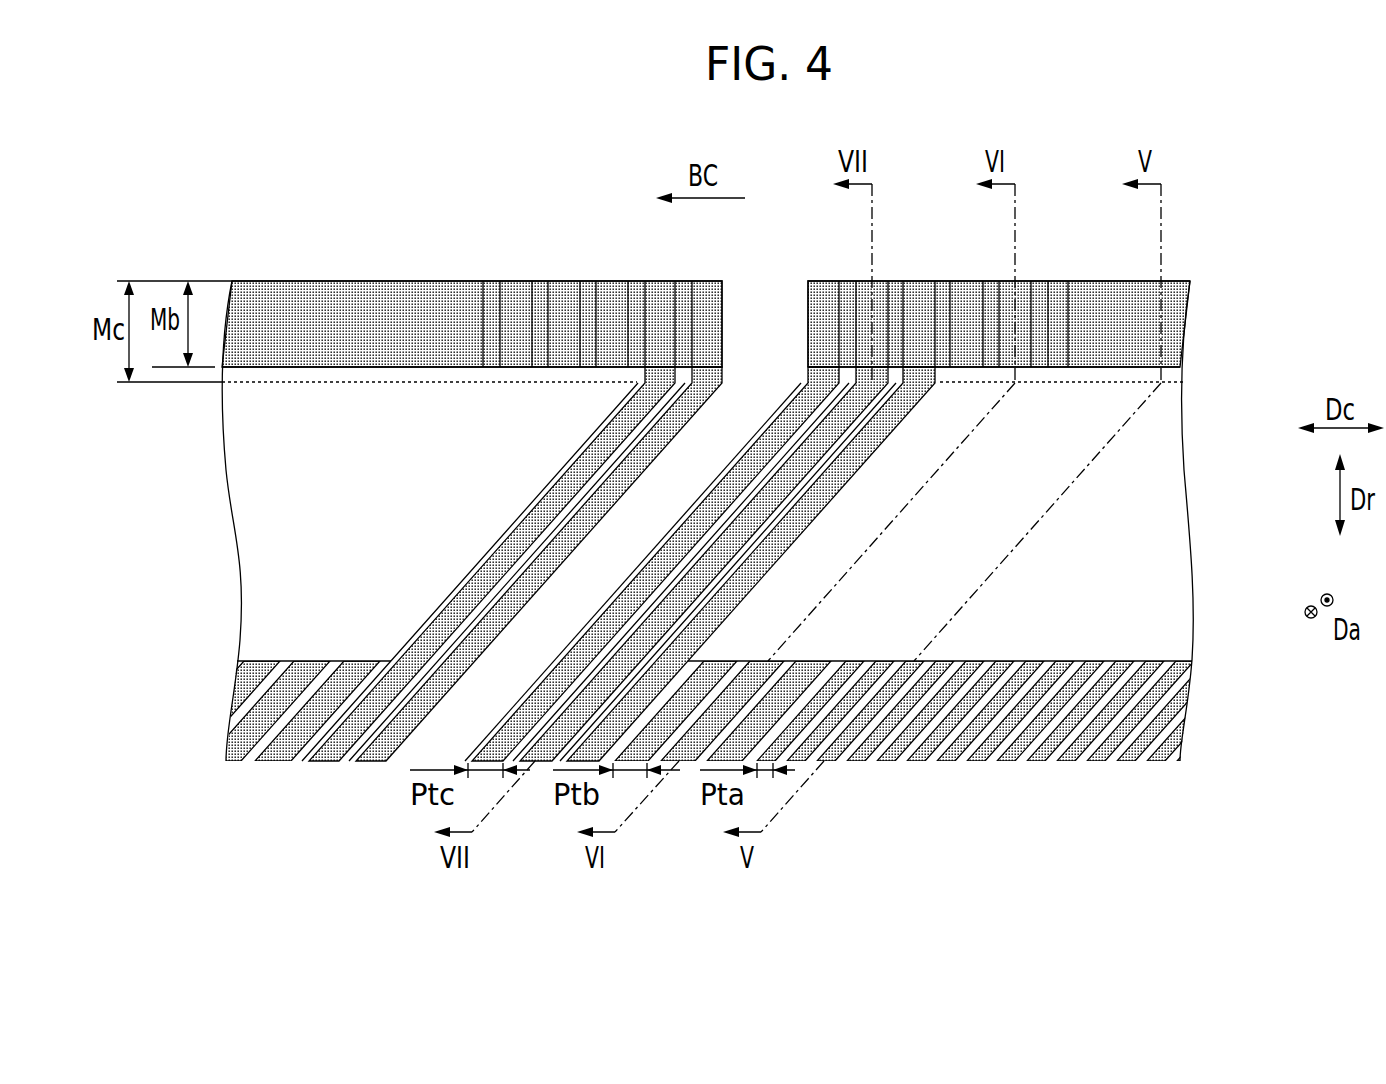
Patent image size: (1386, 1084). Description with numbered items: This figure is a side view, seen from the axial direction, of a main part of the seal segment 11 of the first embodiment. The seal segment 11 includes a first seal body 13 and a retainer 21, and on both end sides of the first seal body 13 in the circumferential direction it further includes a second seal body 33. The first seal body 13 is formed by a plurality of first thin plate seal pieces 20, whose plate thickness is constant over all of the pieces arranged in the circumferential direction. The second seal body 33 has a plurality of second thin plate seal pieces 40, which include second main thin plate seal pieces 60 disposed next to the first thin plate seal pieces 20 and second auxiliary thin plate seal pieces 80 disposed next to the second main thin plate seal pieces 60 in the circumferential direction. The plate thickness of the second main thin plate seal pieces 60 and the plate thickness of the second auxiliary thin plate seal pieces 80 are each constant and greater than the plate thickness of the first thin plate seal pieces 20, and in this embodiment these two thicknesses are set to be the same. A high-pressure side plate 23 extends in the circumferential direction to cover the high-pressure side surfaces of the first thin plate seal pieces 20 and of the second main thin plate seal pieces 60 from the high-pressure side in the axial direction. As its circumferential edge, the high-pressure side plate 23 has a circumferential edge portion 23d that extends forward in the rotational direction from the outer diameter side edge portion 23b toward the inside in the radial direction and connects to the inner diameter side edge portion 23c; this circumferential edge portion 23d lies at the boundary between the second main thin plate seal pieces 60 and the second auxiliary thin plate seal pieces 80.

The seal segment 11 is at (908, 130).
The first seal body 13 is at (485, 277).
The second seal body 33 is at (722, 277).
The retainer 21 is at (1172, 318).
The high-pressure side plate 23 is at (1135, 492).
The outer diameter side edge portion 23b is at (1135, 355).
The inner diameter side edge portion 23c is at (1130, 661).
The circumferential edge portion 23d is at (455, 587).
The first thin plate seal piece 20 is at (1180, 710).
The second thin plate seal piece 40 is at (700, 903).
The second main thin plate seal piece 60 is at (688, 762).
The second auxiliary thin plate seal piece 80 is at (490, 743).